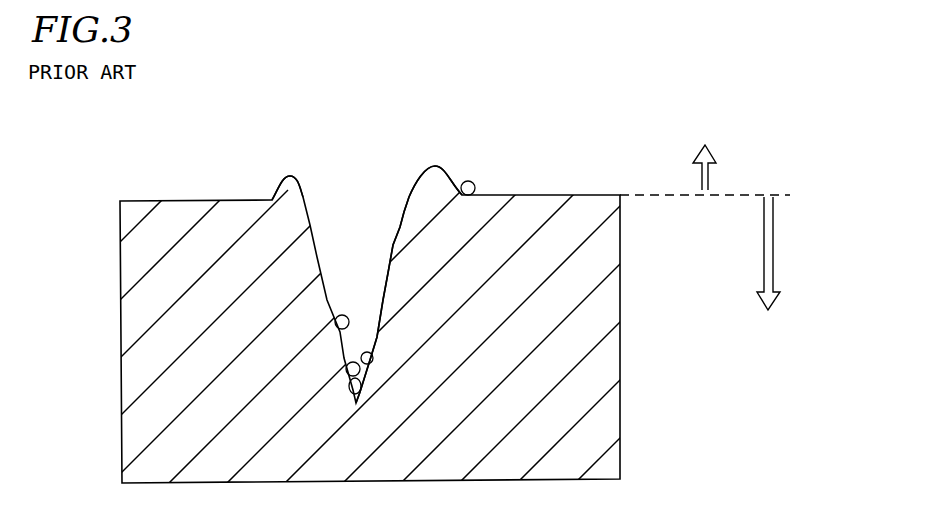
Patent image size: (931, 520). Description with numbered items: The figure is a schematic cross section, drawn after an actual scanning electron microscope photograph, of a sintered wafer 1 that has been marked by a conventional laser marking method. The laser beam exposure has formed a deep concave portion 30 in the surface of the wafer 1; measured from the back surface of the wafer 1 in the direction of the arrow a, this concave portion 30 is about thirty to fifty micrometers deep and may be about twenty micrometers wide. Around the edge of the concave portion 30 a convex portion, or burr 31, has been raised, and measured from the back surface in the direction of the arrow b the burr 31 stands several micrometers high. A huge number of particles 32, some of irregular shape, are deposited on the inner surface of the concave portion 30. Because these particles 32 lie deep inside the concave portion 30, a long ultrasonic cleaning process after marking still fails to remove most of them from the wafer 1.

The sintered wafer 1 is at (131, 278).
The concave portion 30 is at (383, 234).
The convex portion (burr) 31 is at (278, 182).
The particles 32 is at (347, 313).
The arrow a is at (775, 247).
The arrow b is at (699, 174).